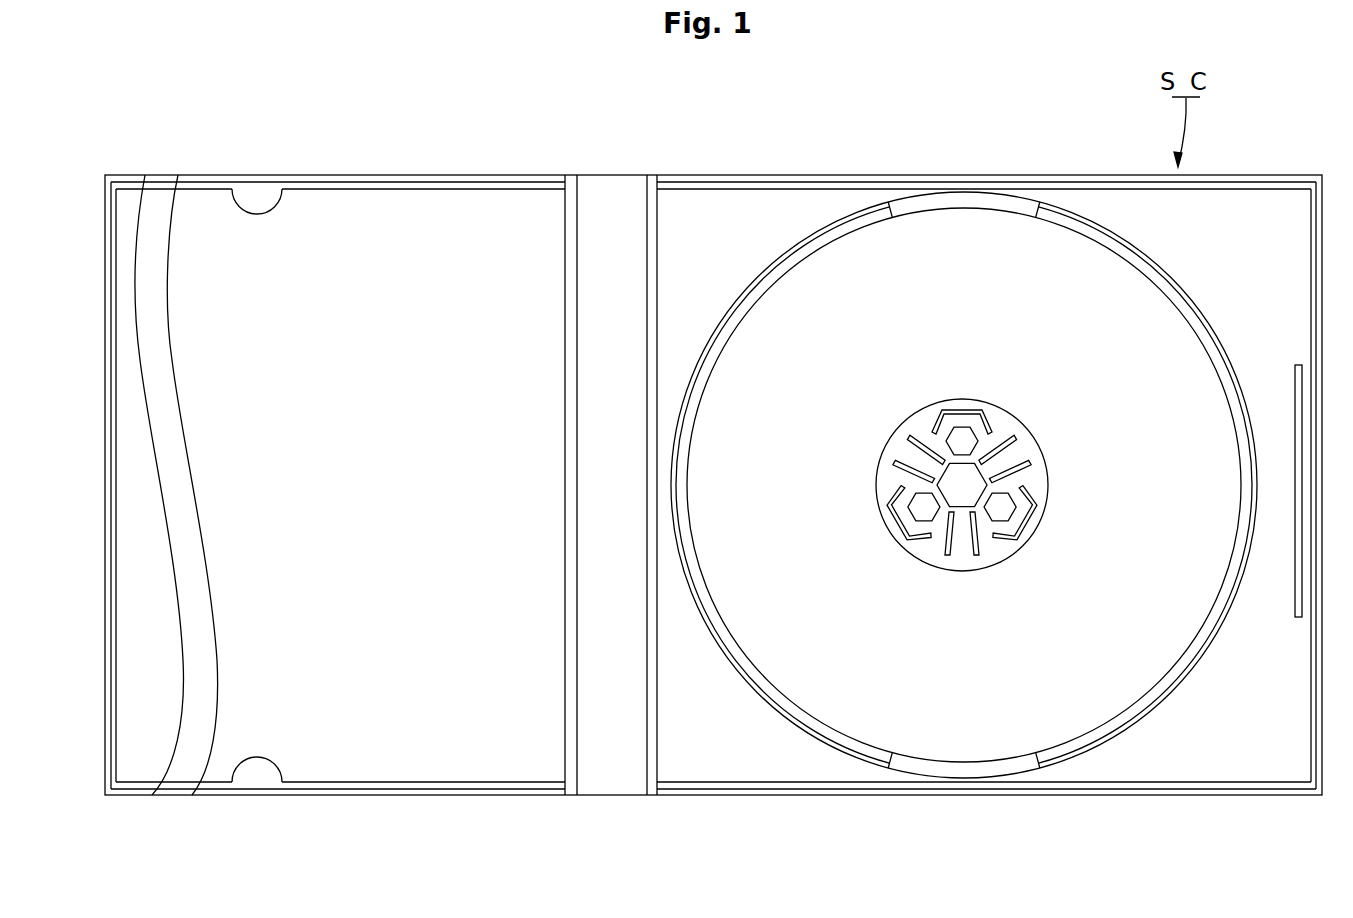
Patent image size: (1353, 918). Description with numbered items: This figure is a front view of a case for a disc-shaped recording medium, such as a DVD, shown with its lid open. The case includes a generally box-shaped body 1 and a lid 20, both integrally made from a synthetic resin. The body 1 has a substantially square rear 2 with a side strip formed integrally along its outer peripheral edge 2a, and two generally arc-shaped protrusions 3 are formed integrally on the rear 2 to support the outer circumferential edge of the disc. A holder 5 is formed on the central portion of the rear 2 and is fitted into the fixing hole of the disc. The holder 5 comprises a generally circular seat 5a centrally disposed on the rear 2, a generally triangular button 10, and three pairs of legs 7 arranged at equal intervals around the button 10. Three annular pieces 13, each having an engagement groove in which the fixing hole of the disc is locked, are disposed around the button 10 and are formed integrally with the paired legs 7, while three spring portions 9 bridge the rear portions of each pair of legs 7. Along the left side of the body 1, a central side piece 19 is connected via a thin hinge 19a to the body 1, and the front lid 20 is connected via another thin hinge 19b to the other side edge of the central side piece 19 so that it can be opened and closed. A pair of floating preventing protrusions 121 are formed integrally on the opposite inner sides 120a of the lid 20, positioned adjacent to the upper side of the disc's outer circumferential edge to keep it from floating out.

The body 1 is at (852, 795).
The rear 2 is at (797, 765).
The tray side edge 2a is at (1313, 738).
The arc-shaped protrusions 3 is at (1165, 280).
The holder 5 is at (1031, 437).
The seat 5a is at (1003, 547).
The legs 7 is at (930, 468).
The spring portions 9 is at (961, 415).
The button 10 is at (972, 487).
The annular pieces 13 is at (958, 420).
The central side piece 19 is at (608, 768).
The thin hinge 19a is at (653, 732).
The thin hinge 19b is at (569, 750).
The lid 20 is at (412, 770).
The inner sides 120a is at (307, 786).
The floating preventing protrusions 121 is at (258, 197).